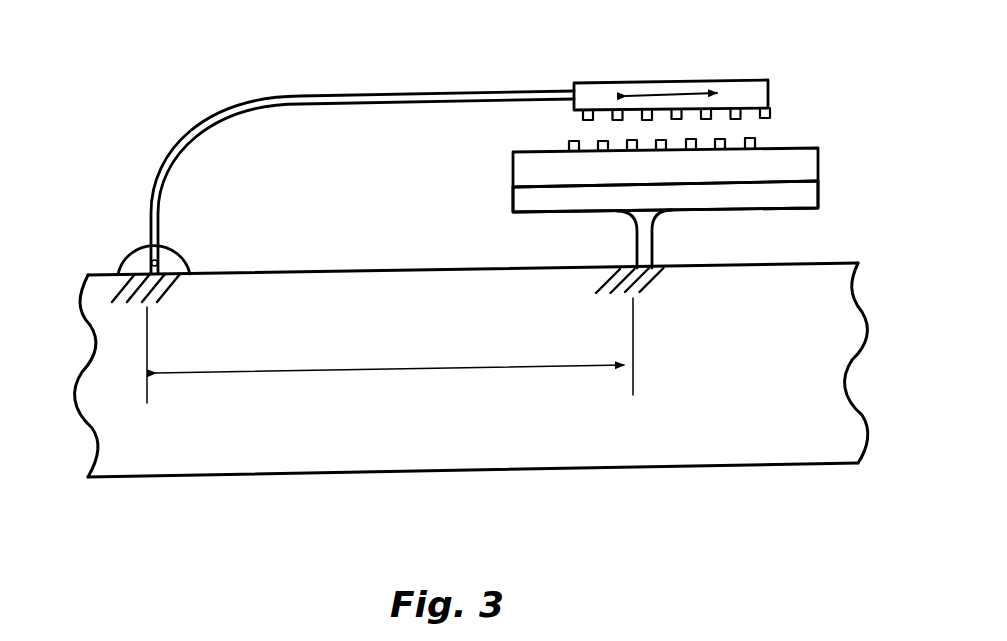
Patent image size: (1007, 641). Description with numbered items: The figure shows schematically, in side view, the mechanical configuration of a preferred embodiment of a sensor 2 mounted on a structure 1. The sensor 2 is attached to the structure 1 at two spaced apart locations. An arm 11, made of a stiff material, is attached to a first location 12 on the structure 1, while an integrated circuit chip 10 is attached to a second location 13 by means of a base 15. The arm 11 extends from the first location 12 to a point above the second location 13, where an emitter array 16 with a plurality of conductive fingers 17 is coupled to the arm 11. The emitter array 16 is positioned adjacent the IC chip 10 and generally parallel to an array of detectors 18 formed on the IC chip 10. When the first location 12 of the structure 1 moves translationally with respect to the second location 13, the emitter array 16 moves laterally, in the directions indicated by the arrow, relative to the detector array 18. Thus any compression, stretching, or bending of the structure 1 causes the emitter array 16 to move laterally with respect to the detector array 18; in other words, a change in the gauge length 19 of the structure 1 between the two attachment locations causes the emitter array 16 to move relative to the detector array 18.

The structure 1 is at (252, 455).
The sensor 2 is at (497, 78).
The integrated circuit chip 10 is at (818, 163).
The arm 11 is at (215, 115).
The first location 12 is at (135, 260).
The second location 13 is at (672, 265).
The base 15 is at (795, 208).
The emitter array 16 is at (745, 78).
The conductive fingers 17 is at (576, 117).
The array of detectors 18 is at (792, 142).
The gauge length 19 is at (373, 370).